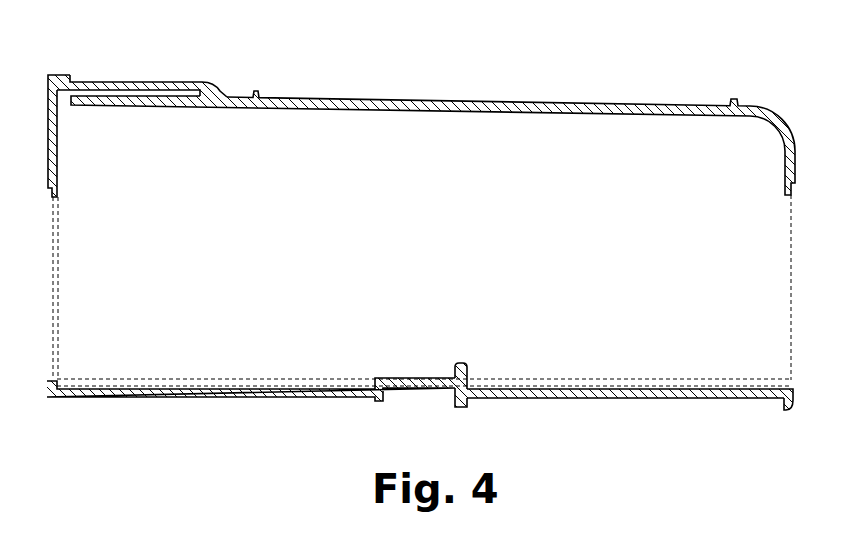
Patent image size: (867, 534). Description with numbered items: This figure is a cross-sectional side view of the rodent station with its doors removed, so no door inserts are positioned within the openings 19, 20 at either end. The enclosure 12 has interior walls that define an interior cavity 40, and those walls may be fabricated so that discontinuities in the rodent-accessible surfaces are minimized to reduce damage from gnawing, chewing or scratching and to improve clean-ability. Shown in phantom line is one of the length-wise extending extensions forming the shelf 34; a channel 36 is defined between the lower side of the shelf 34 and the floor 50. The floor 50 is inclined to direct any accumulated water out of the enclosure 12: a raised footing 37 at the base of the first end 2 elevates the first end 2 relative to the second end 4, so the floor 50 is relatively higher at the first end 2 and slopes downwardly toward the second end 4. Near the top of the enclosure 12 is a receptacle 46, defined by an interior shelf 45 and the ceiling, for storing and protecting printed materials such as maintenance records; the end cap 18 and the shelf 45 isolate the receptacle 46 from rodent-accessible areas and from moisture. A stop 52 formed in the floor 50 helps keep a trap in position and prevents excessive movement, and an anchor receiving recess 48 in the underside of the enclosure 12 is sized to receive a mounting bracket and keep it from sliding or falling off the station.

The first end 2 is at (798, 128).
The second end 4 is at (45, 121).
The enclosure 12 is at (305, 97).
The end cap 18 is at (46, 95).
The opening 19 is at (99, 249).
The opening 20 is at (753, 224).
The shelf 34 is at (196, 378).
The channel 36 is at (781, 386).
The raised footing 37 is at (790, 409).
The interior cavity 40 is at (484, 164).
The interior shelf 45 is at (148, 107).
The receptacle 46 is at (133, 92).
The anchor receiving recess 48 is at (386, 401).
The floor 50 is at (247, 388).
The stop 52 is at (477, 374).